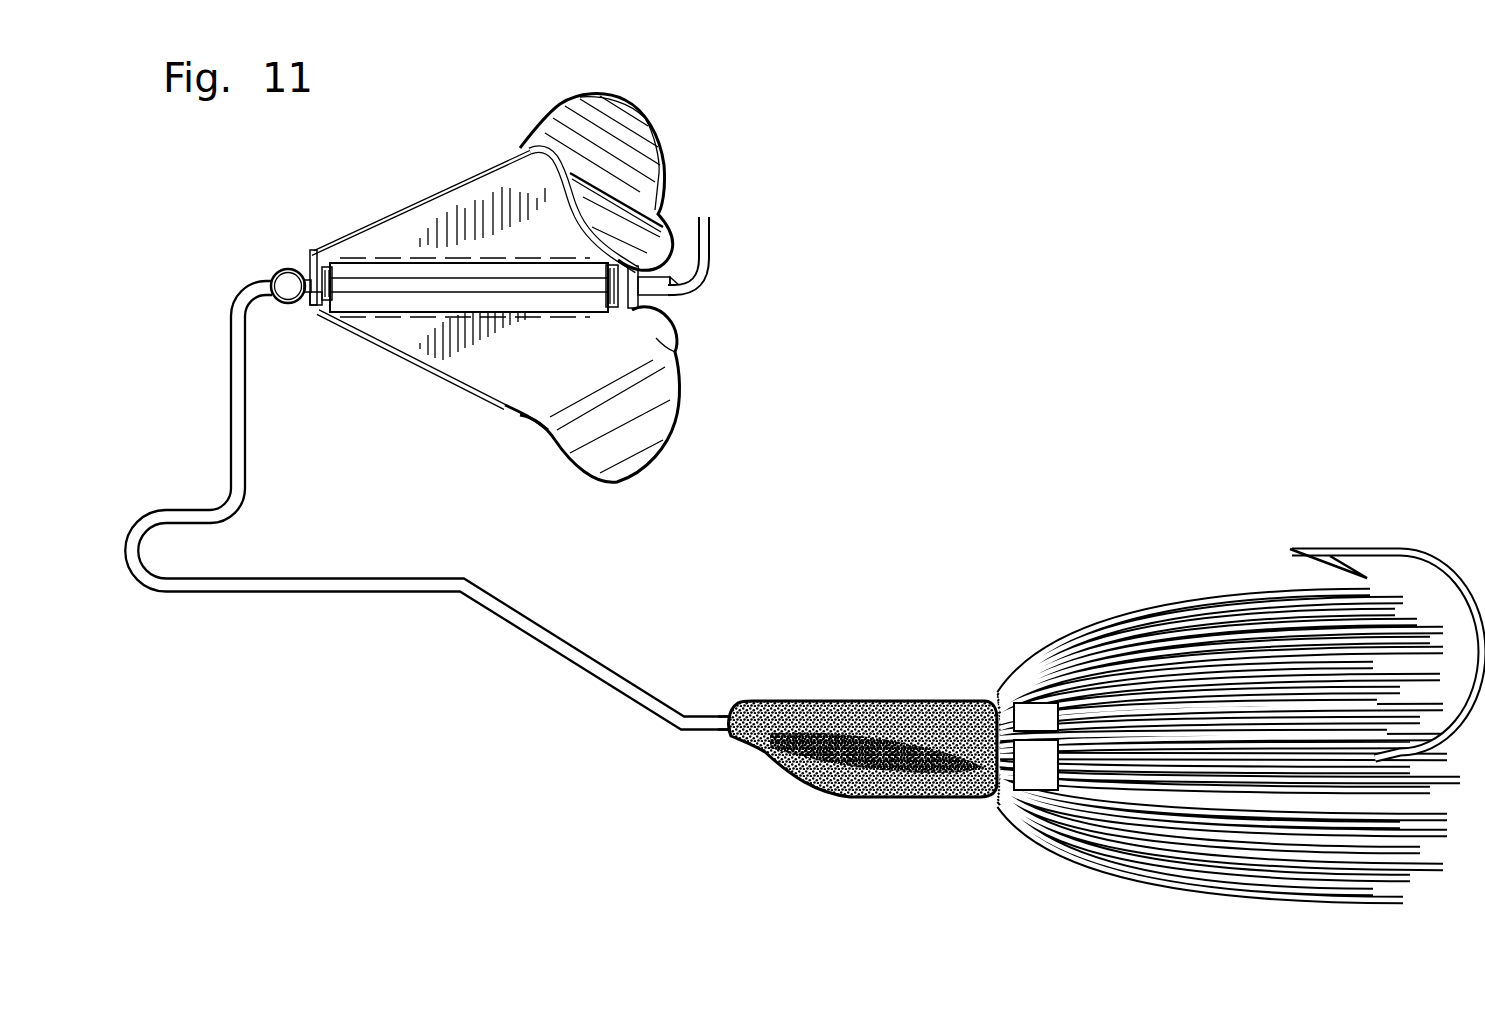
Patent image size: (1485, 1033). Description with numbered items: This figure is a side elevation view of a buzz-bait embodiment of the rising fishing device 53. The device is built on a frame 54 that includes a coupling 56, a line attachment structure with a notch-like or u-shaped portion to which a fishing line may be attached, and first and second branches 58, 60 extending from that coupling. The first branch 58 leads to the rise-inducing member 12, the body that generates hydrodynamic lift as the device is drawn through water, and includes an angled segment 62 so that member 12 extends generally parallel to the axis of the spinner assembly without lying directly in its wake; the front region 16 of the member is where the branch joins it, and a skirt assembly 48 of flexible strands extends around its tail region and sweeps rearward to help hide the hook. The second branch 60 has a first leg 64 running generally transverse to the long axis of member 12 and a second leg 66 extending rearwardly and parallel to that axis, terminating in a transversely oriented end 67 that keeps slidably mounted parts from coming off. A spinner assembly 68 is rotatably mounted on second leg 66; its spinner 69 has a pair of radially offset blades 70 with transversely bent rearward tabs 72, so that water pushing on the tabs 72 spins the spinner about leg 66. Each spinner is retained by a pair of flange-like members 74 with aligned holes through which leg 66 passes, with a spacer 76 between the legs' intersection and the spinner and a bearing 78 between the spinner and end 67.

The rising fishing device 53 is at (216, 210).
The second leg 66 is at (272, 270).
The spacer 76 is at (300, 265).
The spinner assembly 68 is at (366, 210).
The blades 70 is at (424, 198).
The spinner 69 is at (491, 162).
The rearward tabs 72 is at (668, 167).
The end 67 is at (718, 230).
The bearing 78 is at (682, 292).
The flange-like members 74 is at (622, 312).
The first leg 64 is at (229, 385).
The second branch 60 is at (227, 402).
The coupling 56 is at (124, 575).
The first branch 58 is at (340, 600).
The angled segment 62 is at (575, 649).
The frame 54 is at (427, 620).
The front region 16 is at (723, 710).
The rise-inducing member 12 is at (846, 682).
The skirt assembly 48 is at (1098, 616).